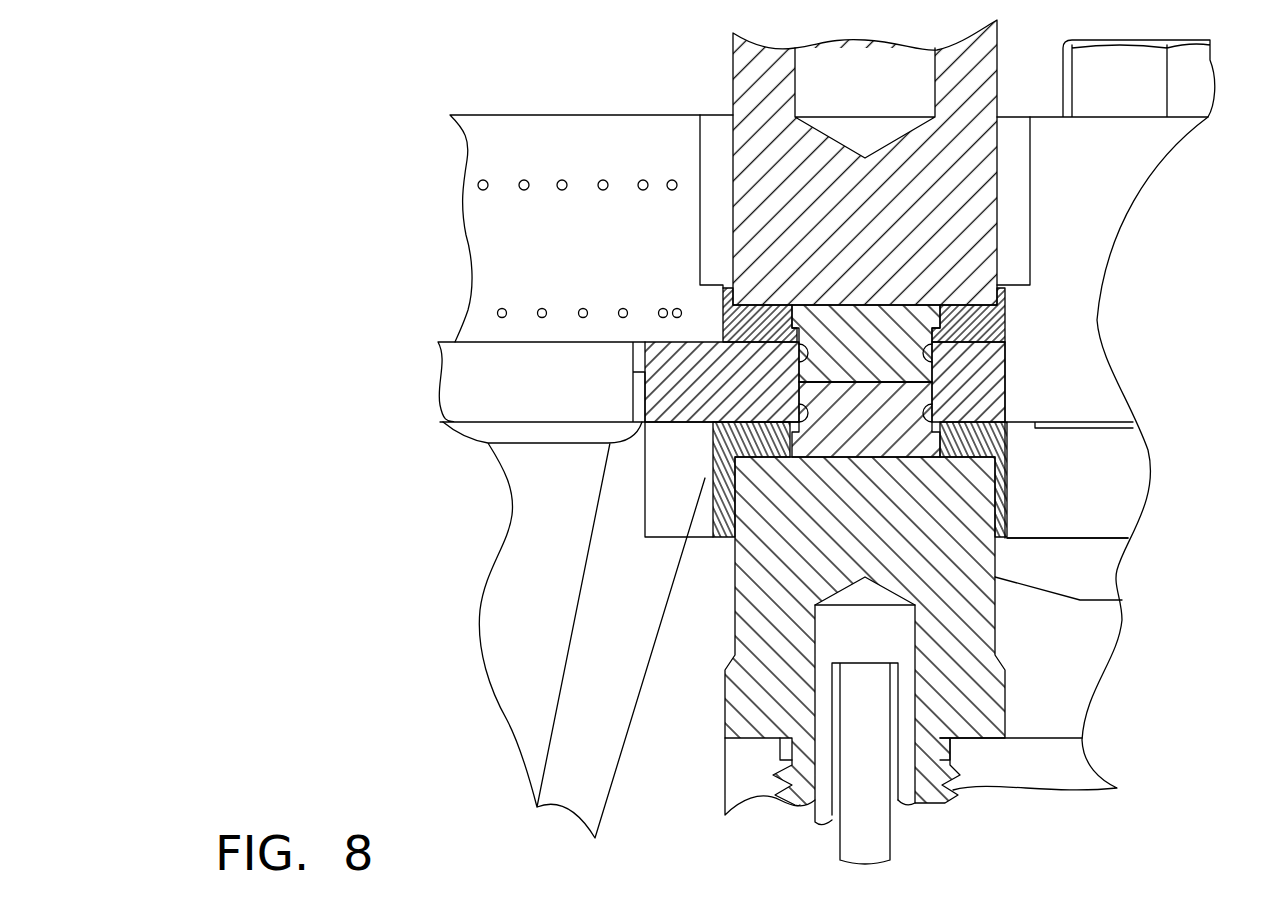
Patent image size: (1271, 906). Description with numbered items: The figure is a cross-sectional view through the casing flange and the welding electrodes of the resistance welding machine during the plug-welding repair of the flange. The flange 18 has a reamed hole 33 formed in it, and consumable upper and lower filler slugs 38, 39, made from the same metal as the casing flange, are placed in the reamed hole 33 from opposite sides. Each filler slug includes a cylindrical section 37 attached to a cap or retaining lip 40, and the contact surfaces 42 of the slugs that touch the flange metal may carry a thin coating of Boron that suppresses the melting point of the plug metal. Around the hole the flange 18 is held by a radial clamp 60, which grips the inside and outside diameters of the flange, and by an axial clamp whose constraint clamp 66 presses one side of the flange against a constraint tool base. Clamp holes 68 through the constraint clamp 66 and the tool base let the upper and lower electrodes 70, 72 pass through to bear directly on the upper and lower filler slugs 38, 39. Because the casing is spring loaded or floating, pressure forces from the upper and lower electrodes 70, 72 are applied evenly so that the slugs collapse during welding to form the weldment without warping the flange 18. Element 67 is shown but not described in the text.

The flange 18 is at (677, 402).
The reamed hole 33 is at (717, 428).
The cylindrical sections 37 is at (827, 323).
The upper filler slug 38 is at (898, 325).
The lower filler slug 39 is at (873, 432).
The retaining lips 40 is at (1000, 303).
The contact surfaces 42 is at (797, 405).
The radial clamp 60 is at (485, 368).
The constraint clamp 66 is at (1110, 520).
The panel edge 67 is at (1092, 402).
The clamp holes 68 is at (1010, 455).
The upper electrode 70 is at (965, 62).
The lower electrode 72 is at (745, 690).